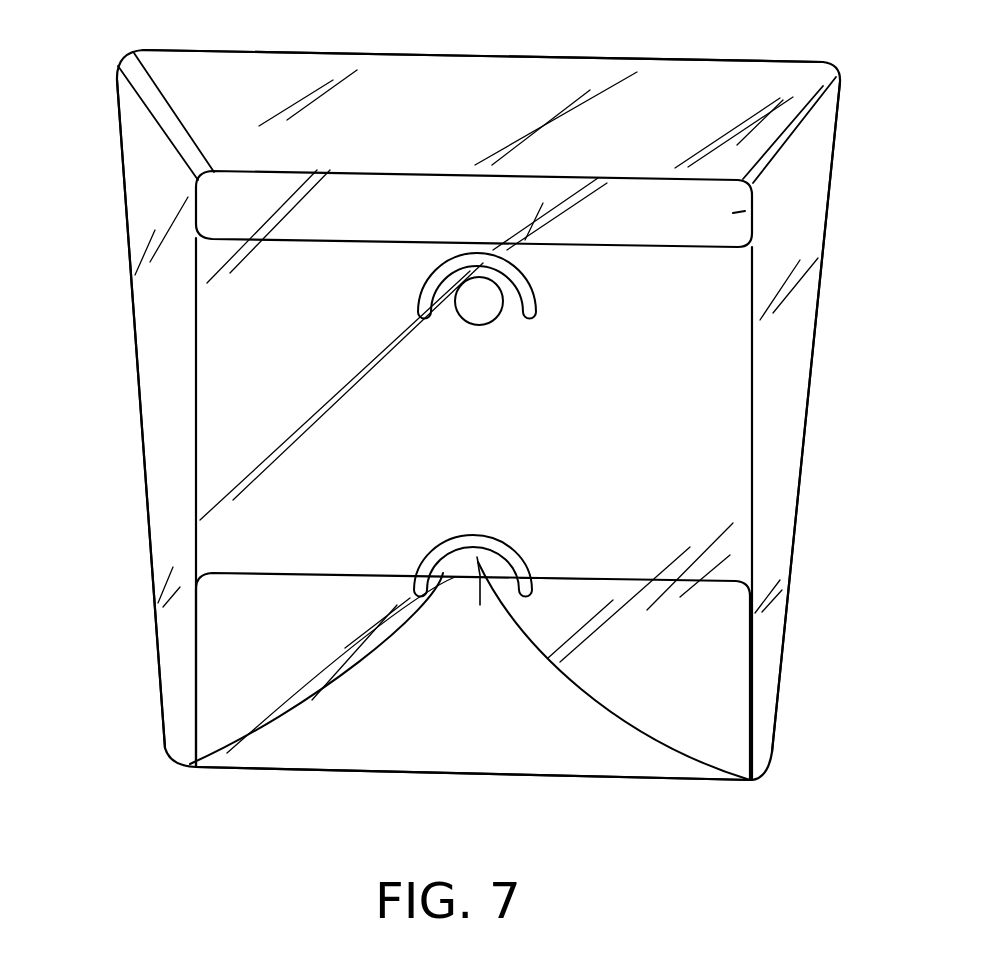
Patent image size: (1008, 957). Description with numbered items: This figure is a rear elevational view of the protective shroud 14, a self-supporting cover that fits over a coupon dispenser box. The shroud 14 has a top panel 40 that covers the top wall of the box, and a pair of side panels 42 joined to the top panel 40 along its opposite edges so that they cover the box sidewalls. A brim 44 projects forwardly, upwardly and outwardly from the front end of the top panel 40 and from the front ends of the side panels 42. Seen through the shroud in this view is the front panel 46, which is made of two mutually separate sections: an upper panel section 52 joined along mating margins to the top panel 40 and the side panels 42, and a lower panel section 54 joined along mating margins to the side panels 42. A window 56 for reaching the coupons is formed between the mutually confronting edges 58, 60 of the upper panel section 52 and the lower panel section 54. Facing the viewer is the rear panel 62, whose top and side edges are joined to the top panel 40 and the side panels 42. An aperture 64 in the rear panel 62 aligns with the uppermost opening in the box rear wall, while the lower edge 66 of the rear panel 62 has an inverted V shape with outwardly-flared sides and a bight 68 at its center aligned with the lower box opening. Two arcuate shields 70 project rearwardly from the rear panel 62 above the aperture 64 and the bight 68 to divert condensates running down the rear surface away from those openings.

The protective shroud 14 is at (123, 207).
The top panel 40 is at (277, 170).
The side panels 42 is at (194, 538).
The brim 44 is at (562, 52).
The front panel 46 is at (733, 213).
The upper panel section 52 is at (222, 197).
The lower panel section 54 is at (397, 753).
The window 56 is at (728, 395).
The edge of upper panel 58 is at (308, 240).
The edge of lower panel 60 is at (553, 573).
The rear panel 62 is at (476, 459).
The aperture 64 is at (473, 327).
The lower edge 66 is at (647, 740).
The bight 68 is at (480, 605).
The arcuate shields 70 is at (467, 252).